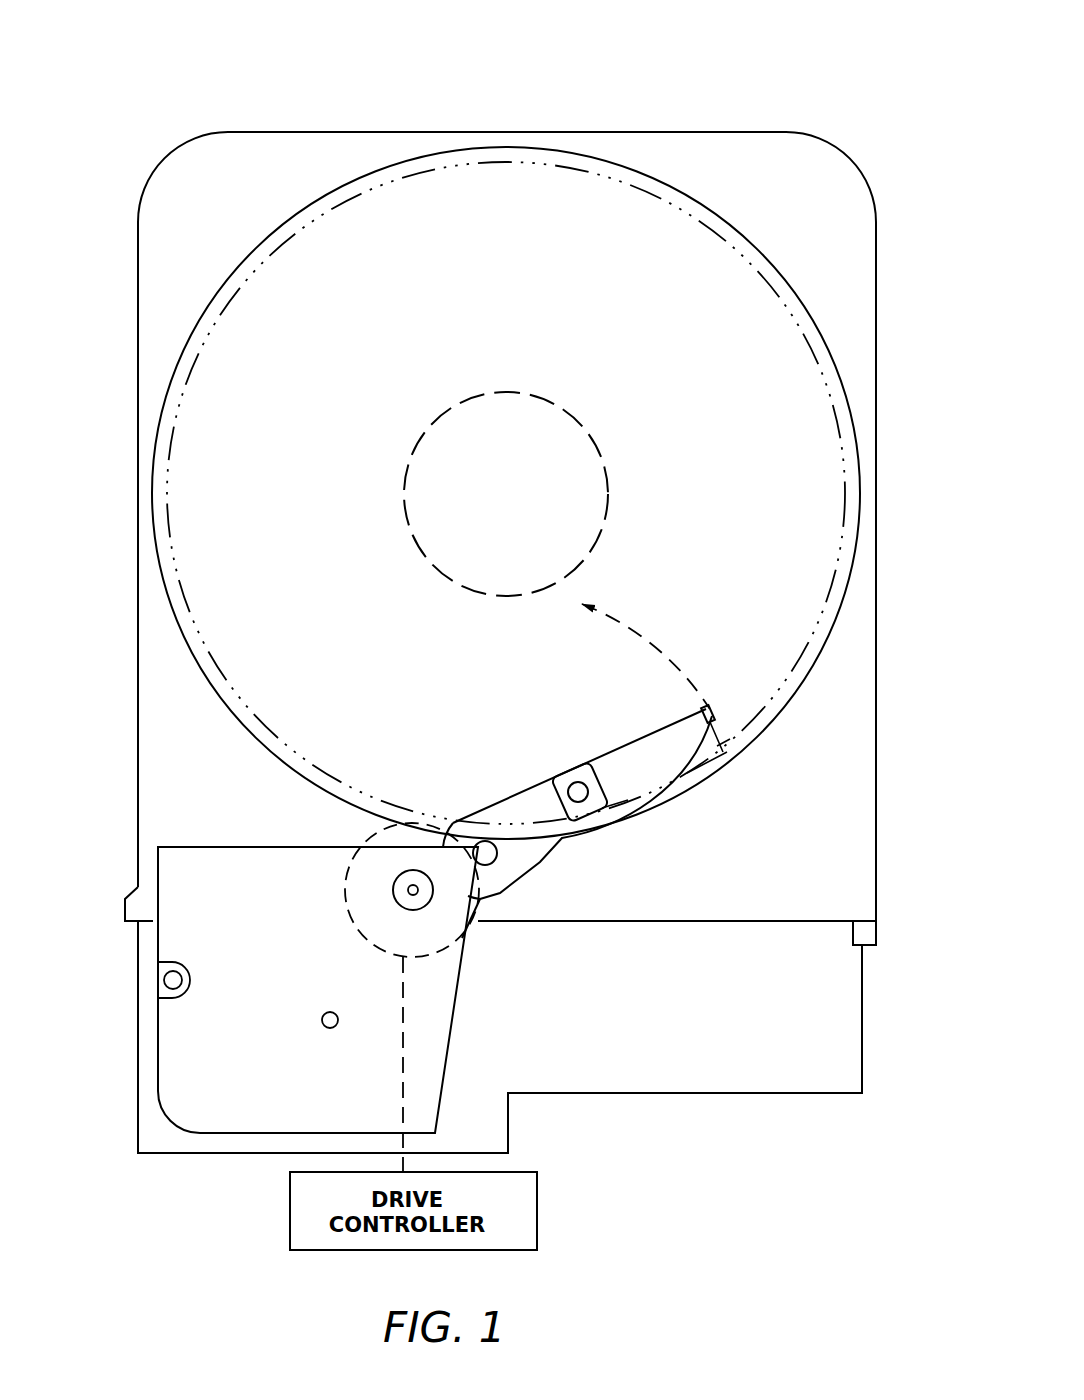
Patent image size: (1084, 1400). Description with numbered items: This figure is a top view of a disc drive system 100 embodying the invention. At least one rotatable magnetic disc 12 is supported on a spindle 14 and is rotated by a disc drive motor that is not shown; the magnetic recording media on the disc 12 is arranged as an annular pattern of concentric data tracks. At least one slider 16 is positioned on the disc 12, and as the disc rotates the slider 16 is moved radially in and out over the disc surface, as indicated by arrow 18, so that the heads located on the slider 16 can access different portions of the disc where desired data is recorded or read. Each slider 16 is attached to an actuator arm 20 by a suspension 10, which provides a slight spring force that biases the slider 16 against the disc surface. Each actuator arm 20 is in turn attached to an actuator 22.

The disc drive system 100 is at (395, 118).
The rotatable magnetic disc 12 is at (543, 264).
The spindle 14 is at (546, 461).
The suspension 10 is at (512, 795).
The slider 16 is at (720, 718).
The arrow 18 is at (632, 632).
The actuator arm 20 is at (415, 820).
The actuator 22 is at (358, 836).